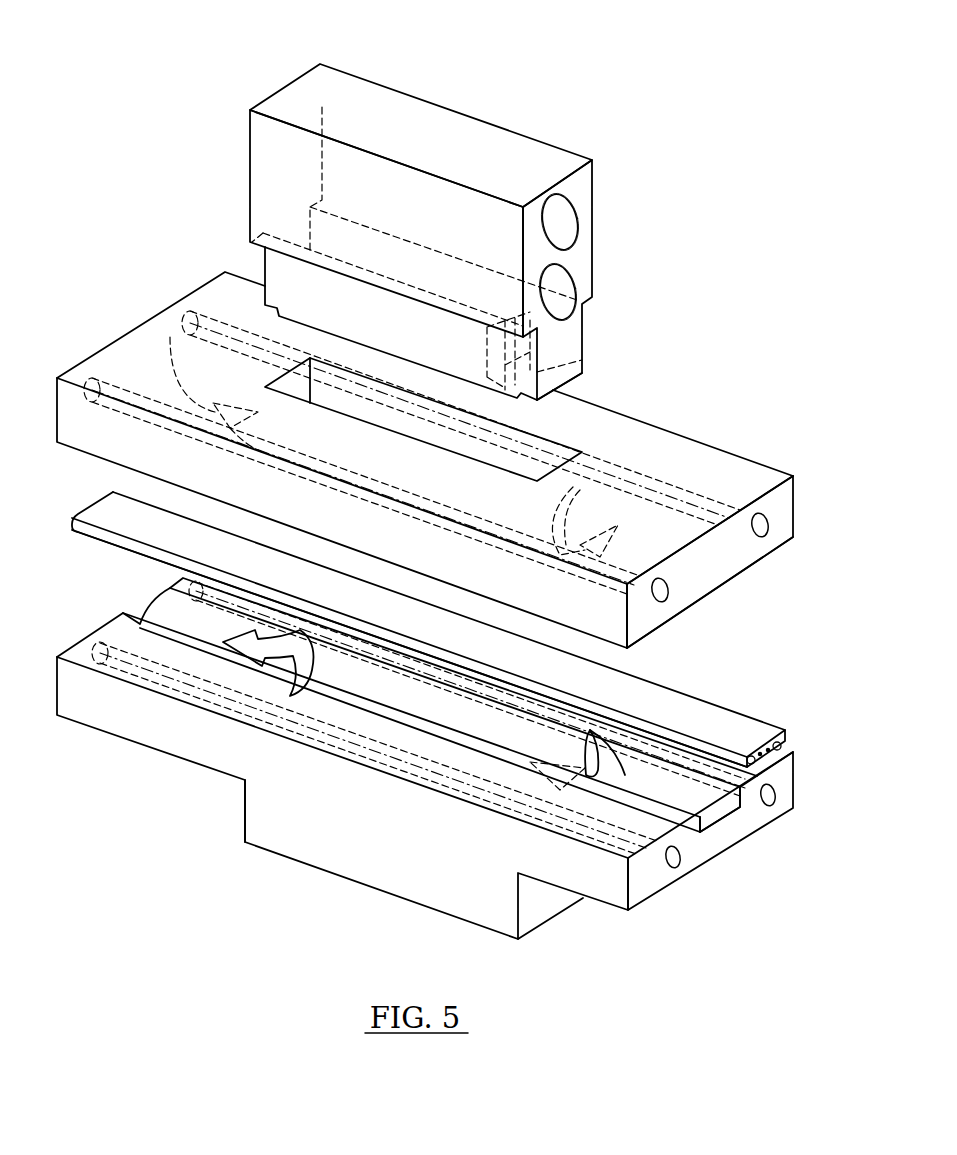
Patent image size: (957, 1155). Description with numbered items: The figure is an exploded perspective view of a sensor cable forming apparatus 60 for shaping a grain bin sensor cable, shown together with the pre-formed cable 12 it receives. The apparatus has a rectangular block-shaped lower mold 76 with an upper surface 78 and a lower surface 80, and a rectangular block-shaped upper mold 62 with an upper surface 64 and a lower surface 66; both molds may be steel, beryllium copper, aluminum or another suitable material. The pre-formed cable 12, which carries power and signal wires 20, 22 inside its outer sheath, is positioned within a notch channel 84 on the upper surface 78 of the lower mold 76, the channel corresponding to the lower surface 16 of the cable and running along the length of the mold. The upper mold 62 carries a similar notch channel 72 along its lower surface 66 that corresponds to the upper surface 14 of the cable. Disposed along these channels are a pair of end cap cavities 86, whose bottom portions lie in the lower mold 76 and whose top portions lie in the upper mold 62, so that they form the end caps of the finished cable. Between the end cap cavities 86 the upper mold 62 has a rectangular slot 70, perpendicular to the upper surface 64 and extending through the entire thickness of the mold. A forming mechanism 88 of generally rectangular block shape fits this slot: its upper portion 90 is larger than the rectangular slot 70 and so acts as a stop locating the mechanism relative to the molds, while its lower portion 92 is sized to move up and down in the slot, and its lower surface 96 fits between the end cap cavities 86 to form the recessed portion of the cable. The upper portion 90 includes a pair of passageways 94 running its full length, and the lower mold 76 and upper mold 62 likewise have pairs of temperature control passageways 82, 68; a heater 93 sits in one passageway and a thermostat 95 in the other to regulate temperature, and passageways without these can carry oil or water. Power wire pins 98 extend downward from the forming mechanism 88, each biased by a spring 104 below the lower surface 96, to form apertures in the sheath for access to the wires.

The pre-formed cable 12 is at (80, 515).
The upper surface of the cable 14 is at (136, 510).
The lower surface of the cable 16 is at (120, 550).
The power wires 20 is at (748, 758).
The signal wires 22 is at (762, 750).
The sensor cable forming apparatus 60 is at (683, 104).
The upper mold 62 is at (699, 434).
The upper surface of the upper mold 64 is at (718, 462).
The lower surface of the upper mold 66 is at (735, 585).
The temperature control passageways 68 is at (768, 540).
The rectangular slot 70 is at (291, 366).
The notch channel 72 is at (706, 597).
The lower mold 76 is at (297, 868).
The upper surface of the lower mold 78 is at (75, 653).
The lower surface of the lower mold 80 is at (191, 765).
The temperature control passageways 82 is at (677, 868).
The notch channel 84 is at (722, 815).
The end cap cavities 86 is at (178, 365).
The forming mechanism 88 is at (427, 96).
The upper portion of the forming mechanism 90 is at (477, 115).
The lower portion of the forming mechanism 92 is at (585, 322).
The heater 93 is at (565, 218).
The passageways 94 is at (575, 196).
The thermostat 95 is at (562, 290).
The lower surface of the forming mechanism 96 is at (558, 385).
The power wire pins 98 is at (582, 362).
The spring 104 is at (537, 345).